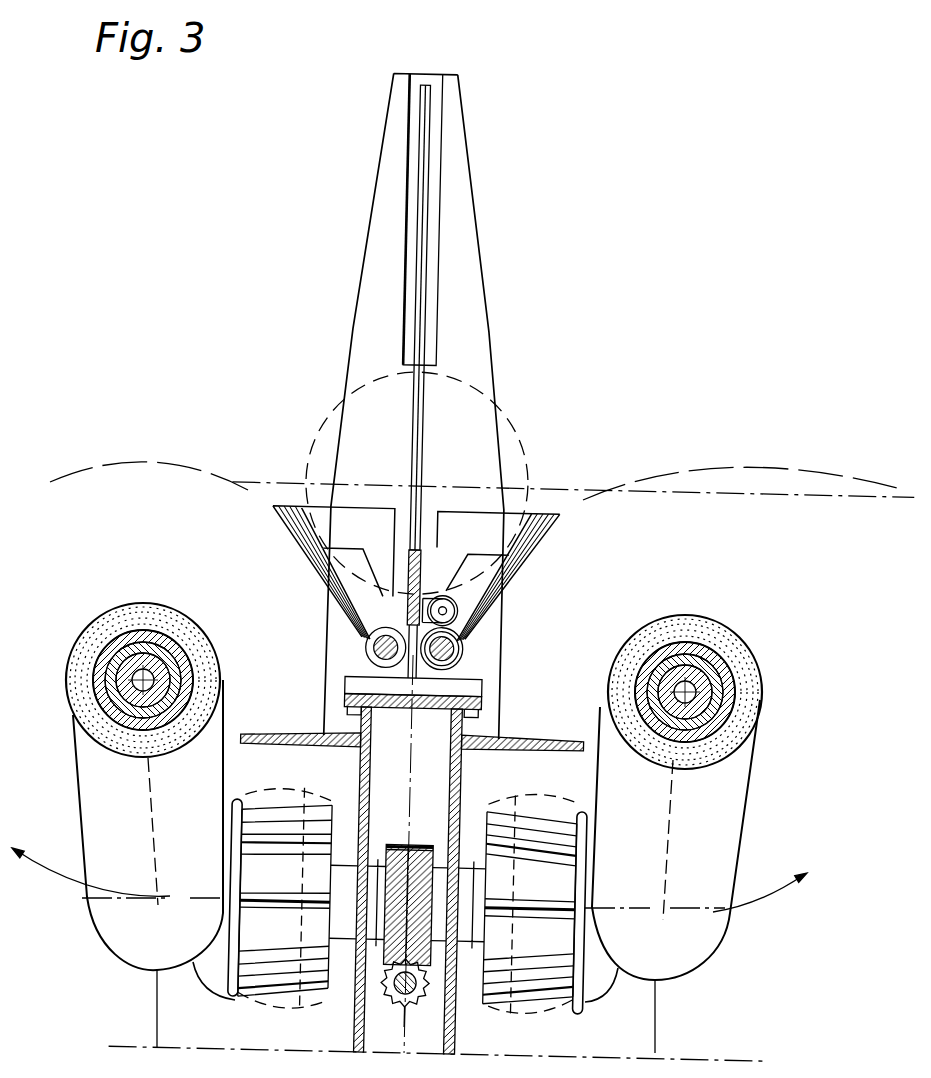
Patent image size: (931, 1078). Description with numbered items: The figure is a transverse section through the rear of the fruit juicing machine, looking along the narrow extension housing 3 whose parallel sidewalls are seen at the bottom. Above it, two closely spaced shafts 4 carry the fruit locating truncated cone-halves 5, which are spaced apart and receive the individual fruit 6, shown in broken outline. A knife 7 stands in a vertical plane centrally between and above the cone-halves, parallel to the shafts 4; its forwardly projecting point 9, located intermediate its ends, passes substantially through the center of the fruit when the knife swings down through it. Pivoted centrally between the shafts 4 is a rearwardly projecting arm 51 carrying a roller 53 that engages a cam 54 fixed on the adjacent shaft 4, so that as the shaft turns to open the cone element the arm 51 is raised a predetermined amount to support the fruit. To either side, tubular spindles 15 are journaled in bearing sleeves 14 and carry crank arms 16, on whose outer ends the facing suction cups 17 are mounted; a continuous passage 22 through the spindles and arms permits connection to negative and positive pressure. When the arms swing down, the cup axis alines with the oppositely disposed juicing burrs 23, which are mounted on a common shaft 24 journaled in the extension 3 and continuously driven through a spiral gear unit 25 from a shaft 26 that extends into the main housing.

The extension housing 3 is at (372, 778).
The shafts 4 is at (380, 637).
The fruit locating truncated cone-halves 5 is at (297, 535).
The fruit 6 is at (478, 388).
The knife 7 is at (423, 242).
The point 9 is at (418, 311).
The bearing sleeves 14 is at (160, 640).
The tubular spindles 15 is at (190, 658).
The crank arms 16 is at (97, 785).
The suction cups 17 is at (218, 970).
The continuous passage 22 is at (147, 695).
The juicing burrs 23 is at (288, 965).
The common shaft 24 is at (437, 870).
The spiral gear unit 25 is at (393, 1005).
The shaft 26 is at (428, 995).
The arm 51 is at (425, 562).
The roller 53 is at (458, 602).
The cam 54 is at (405, 650).